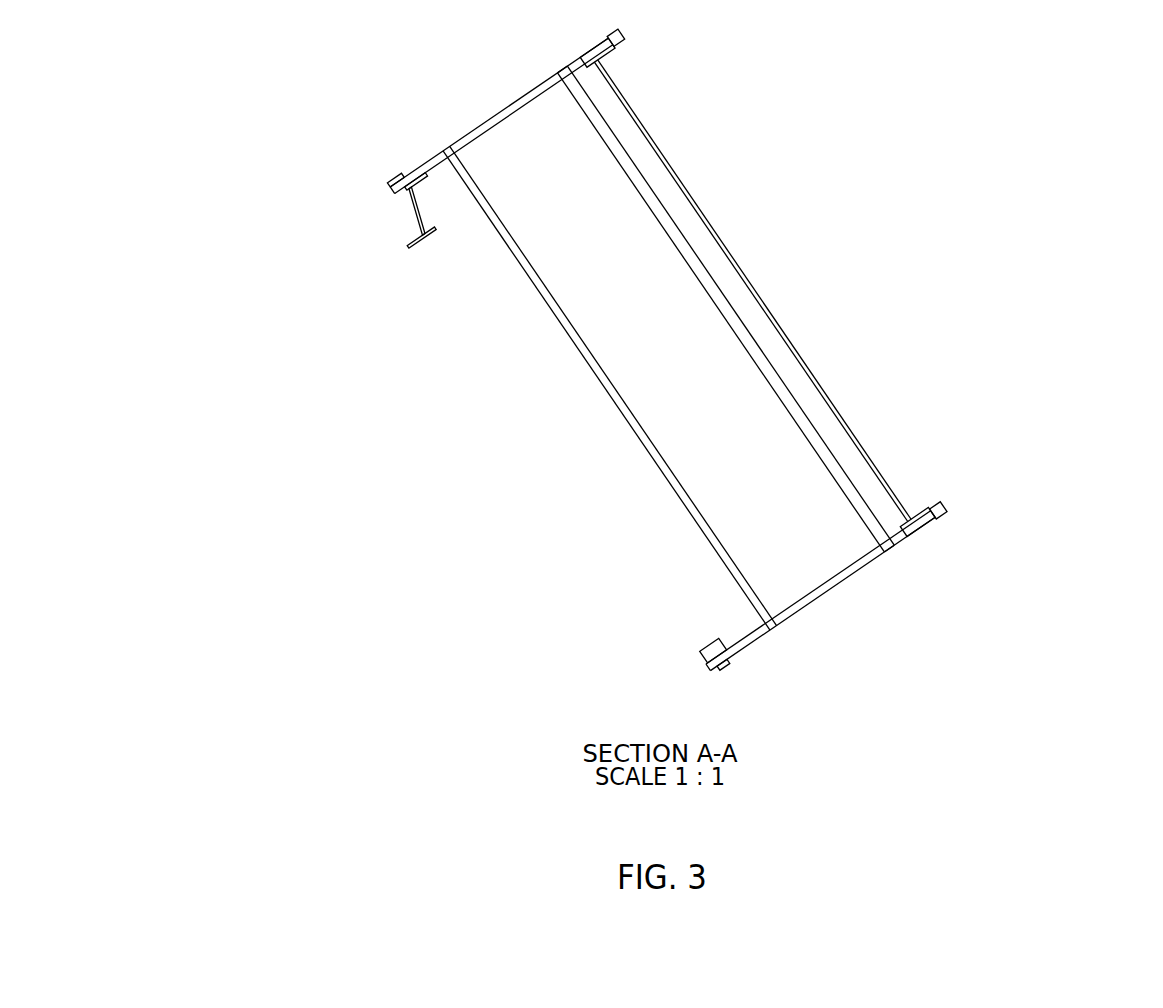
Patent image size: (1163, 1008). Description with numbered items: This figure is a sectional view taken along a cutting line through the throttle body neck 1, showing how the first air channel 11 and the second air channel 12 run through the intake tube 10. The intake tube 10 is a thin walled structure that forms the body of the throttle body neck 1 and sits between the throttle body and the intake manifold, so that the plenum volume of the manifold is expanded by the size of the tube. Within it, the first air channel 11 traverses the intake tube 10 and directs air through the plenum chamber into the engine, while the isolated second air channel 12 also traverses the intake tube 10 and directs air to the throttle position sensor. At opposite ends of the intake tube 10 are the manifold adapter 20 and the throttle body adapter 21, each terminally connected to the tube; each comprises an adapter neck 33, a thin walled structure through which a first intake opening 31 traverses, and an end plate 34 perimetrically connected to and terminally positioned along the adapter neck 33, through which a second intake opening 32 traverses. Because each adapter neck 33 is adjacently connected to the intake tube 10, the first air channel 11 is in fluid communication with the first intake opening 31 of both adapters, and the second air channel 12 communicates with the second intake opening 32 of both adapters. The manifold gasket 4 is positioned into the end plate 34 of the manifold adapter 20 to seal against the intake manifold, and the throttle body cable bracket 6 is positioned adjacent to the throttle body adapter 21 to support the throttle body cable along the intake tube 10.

The throttle body neck 1 is at (901, 212).
The manifold gasket 4 is at (415, 176).
The throttle body cable bracket 6 is at (415, 209).
The intake tube 10 is at (632, 419).
The first air channel 11 is at (910, 673).
The second air channel 12 is at (935, 569).
The manifold adapter 20 is at (1069, 431).
The throttle body adapter 21 is at (271, 247).
The first intake opening 31 is at (483, 123).
The second intake opening 32 is at (592, 81).
The adapter neck 33 is at (465, 182).
The end plate 34 is at (391, 193).